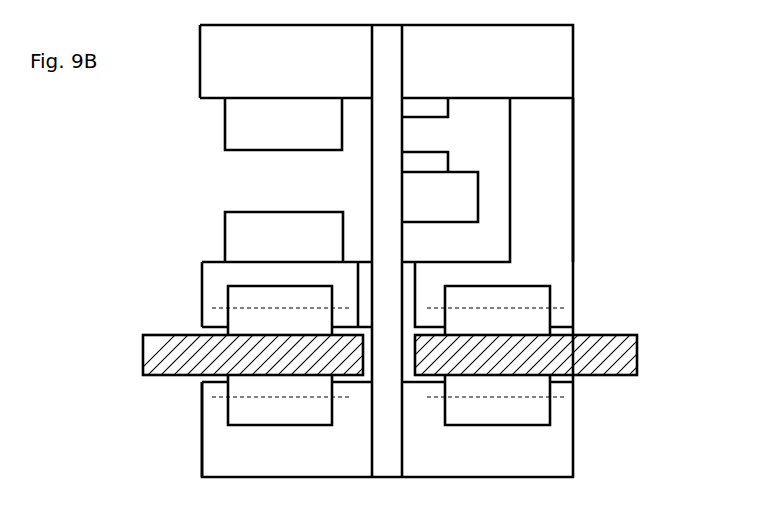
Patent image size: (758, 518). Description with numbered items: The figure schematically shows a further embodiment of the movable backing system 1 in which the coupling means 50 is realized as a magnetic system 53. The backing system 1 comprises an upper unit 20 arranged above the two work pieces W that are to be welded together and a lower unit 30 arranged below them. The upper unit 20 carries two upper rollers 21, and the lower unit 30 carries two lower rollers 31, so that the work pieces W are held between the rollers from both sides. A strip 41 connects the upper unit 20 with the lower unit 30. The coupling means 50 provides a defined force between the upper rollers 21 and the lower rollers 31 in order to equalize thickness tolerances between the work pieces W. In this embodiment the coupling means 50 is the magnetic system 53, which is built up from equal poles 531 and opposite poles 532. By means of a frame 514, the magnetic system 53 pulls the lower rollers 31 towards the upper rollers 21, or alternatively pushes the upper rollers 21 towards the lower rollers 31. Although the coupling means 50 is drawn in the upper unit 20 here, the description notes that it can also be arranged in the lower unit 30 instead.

The movable backing system 1 is at (618, 73).
The coupling means 50 is at (272, 170).
The equal poles 531 is at (272, 128).
The opposite poles 532 is at (424, 106).
The magnetic system 53 is at (440, 135).
The frame 514 is at (573, 213).
The strip 41 is at (385, 242).
The upper unit 20 is at (203, 270).
The upper rollers 21 is at (232, 300).
The work pieces W is at (168, 363).
The lower rollers 31 is at (228, 395).
The lower unit 30 is at (230, 455).